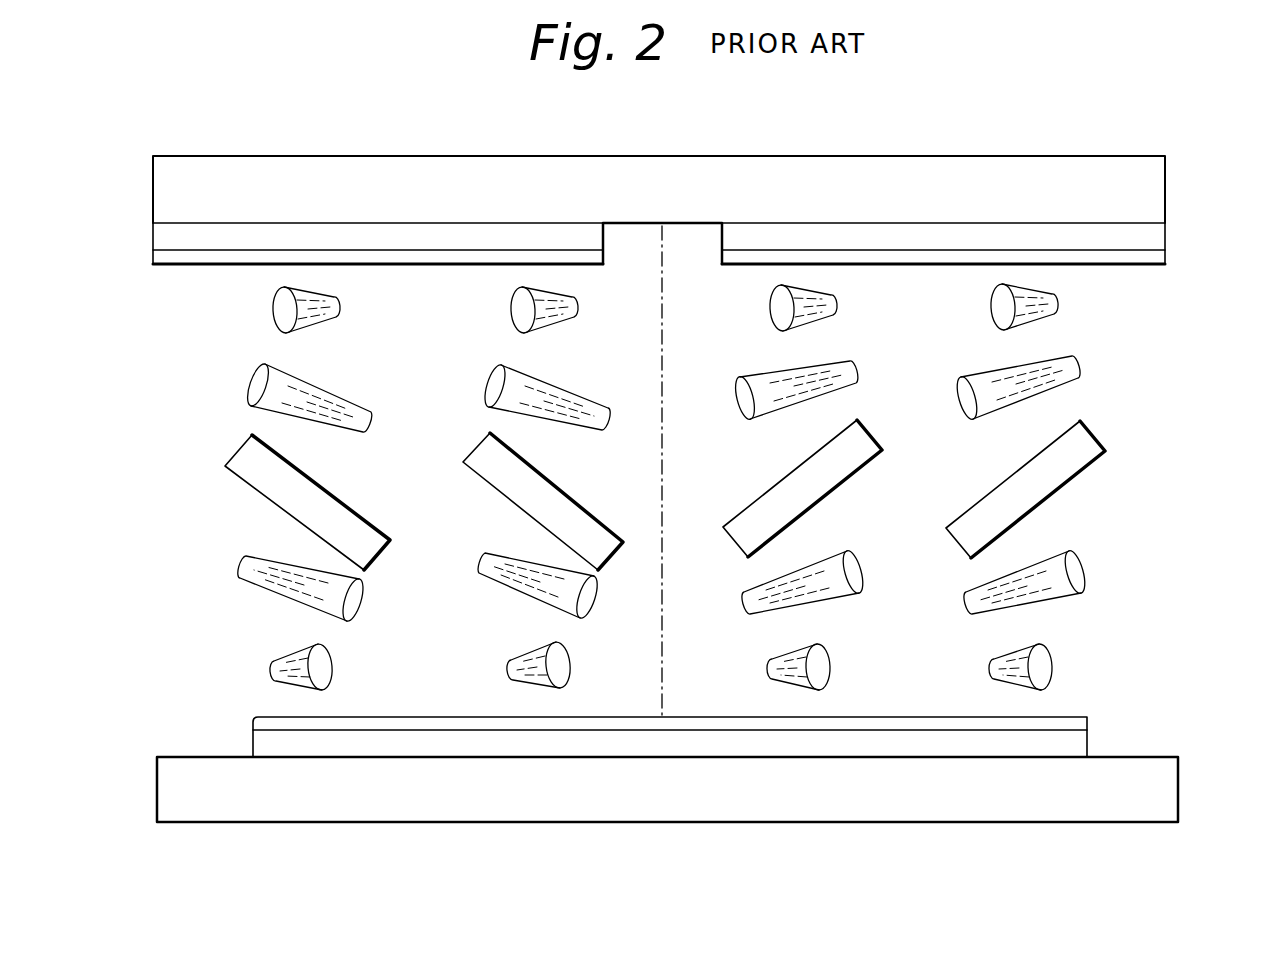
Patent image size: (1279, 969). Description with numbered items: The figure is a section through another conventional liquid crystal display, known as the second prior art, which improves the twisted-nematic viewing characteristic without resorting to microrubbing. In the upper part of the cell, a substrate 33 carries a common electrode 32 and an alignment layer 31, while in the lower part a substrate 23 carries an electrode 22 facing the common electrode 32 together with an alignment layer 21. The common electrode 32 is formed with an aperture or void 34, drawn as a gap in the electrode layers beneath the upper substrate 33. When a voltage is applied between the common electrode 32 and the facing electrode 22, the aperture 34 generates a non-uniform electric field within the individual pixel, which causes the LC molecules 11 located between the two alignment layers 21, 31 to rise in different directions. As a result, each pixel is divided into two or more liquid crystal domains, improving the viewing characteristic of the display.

The LC molecules 11 is at (1088, 446).
The alignment layer 21 is at (1089, 722).
The electrode 22 is at (1089, 745).
The substrate 23 is at (1180, 797).
The alignment layer 31 is at (1160, 256).
The common electrode 32 is at (1160, 237).
The substrate 33 is at (1157, 185).
The aperture 34 is at (688, 233).